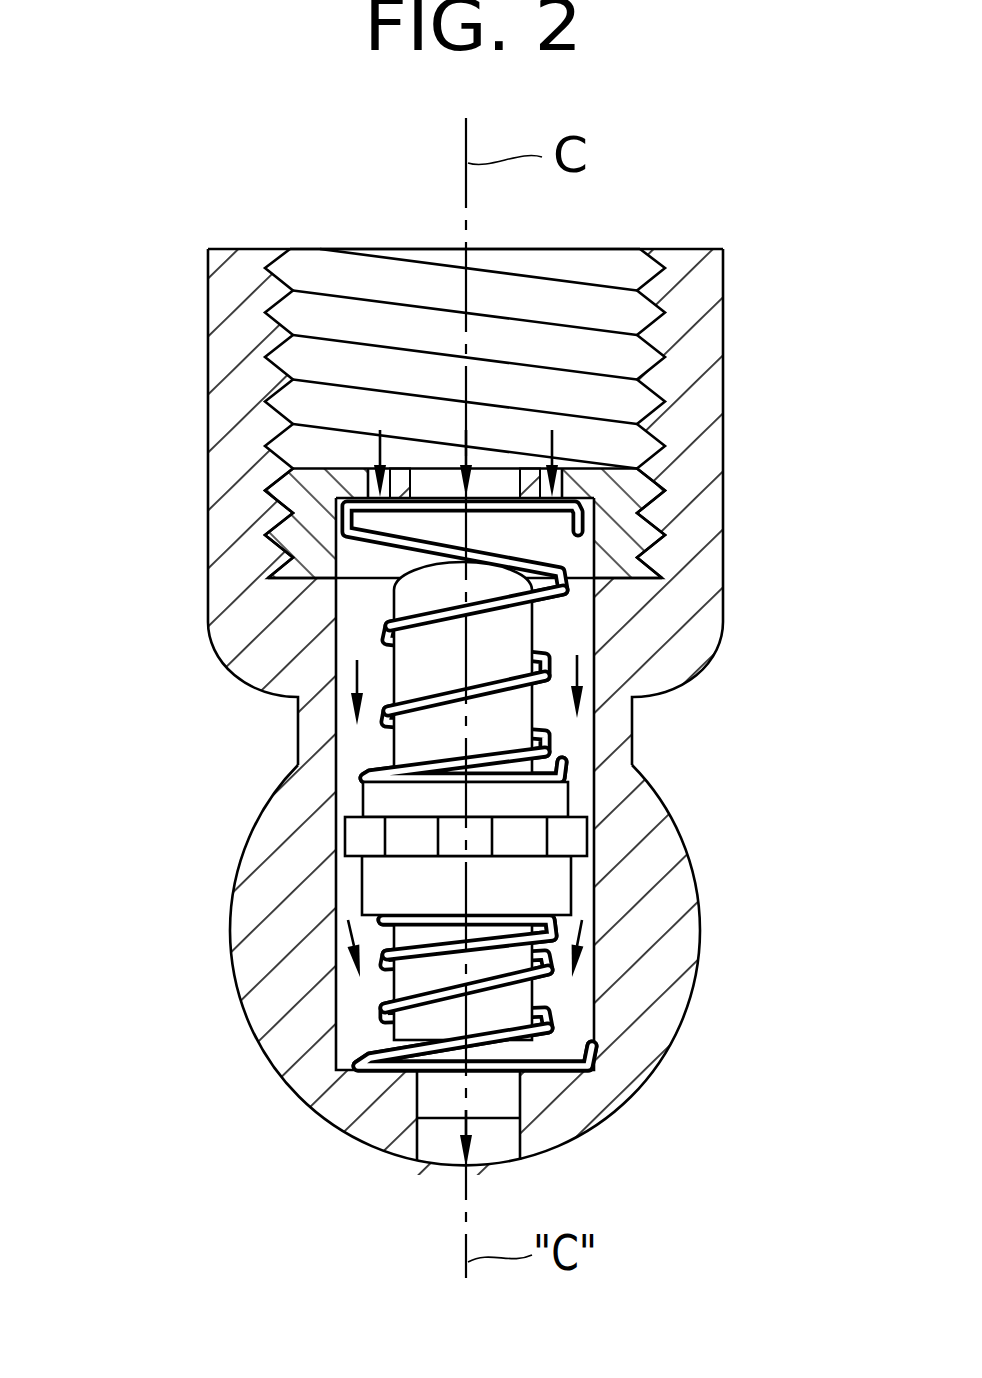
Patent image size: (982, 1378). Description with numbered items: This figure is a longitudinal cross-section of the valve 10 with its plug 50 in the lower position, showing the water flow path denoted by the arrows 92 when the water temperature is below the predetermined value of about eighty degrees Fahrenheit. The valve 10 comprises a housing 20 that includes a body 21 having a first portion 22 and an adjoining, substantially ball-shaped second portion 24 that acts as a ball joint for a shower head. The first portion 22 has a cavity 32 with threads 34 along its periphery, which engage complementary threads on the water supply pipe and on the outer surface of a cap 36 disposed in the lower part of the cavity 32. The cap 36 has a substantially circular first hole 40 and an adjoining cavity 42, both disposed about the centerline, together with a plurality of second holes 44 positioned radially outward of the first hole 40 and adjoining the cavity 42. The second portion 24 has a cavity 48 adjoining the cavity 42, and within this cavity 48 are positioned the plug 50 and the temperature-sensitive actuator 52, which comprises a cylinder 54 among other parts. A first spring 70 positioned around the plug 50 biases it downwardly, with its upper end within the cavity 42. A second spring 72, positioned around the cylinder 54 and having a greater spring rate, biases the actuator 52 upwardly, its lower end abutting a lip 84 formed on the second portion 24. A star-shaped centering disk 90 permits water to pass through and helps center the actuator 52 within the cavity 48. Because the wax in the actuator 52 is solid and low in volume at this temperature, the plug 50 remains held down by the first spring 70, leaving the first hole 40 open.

The valve 10 is at (760, 250).
The housing 20 is at (216, 692).
The body 21 is at (191, 305).
The first portion 22 is at (218, 405).
The second portion 24 is at (242, 918).
The cavity 32 is at (586, 229).
The threads 34 is at (428, 262).
The cap 36 is at (265, 553).
The first hole 40 is at (650, 515).
The cavity 42 is at (275, 622).
The second holes 44 is at (388, 480).
The cavity 48 is at (580, 738).
The plug 50 is at (512, 625).
The temperature-sensitive actuator 52 is at (347, 757).
The cylinder 54 is at (525, 1000).
The first spring 70 is at (372, 782).
The second spring 72 is at (350, 1060).
The lip 84 is at (372, 1072).
The centering disk 90 is at (570, 842).
The arrows 92 is at (466, 430).